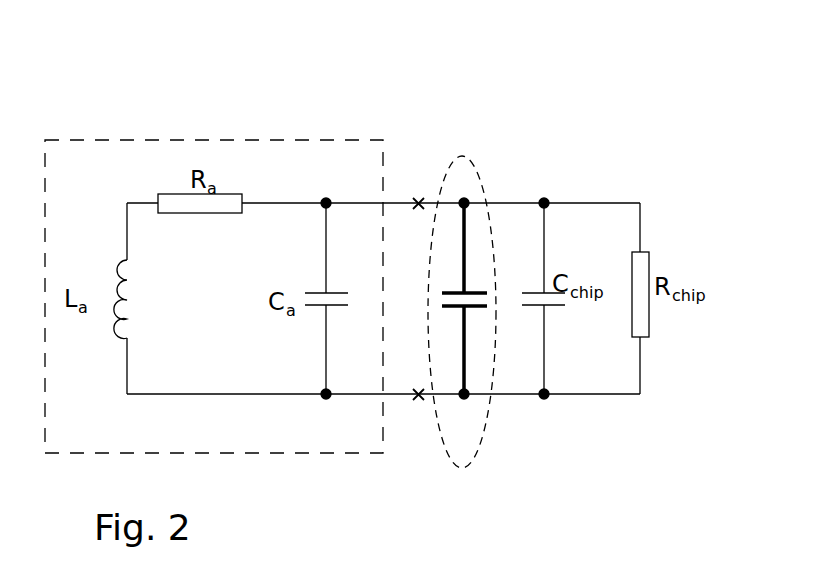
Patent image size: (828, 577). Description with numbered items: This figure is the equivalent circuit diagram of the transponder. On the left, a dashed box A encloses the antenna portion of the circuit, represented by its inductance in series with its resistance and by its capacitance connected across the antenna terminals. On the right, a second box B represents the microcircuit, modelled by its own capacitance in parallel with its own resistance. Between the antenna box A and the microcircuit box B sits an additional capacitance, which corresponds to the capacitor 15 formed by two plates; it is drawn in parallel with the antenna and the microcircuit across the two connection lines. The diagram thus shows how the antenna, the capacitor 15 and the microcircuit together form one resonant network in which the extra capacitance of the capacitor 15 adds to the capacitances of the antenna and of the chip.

The capacitor 15 is at (477, 158).
The box A is at (175, 141).
The box B is at (585, 202).